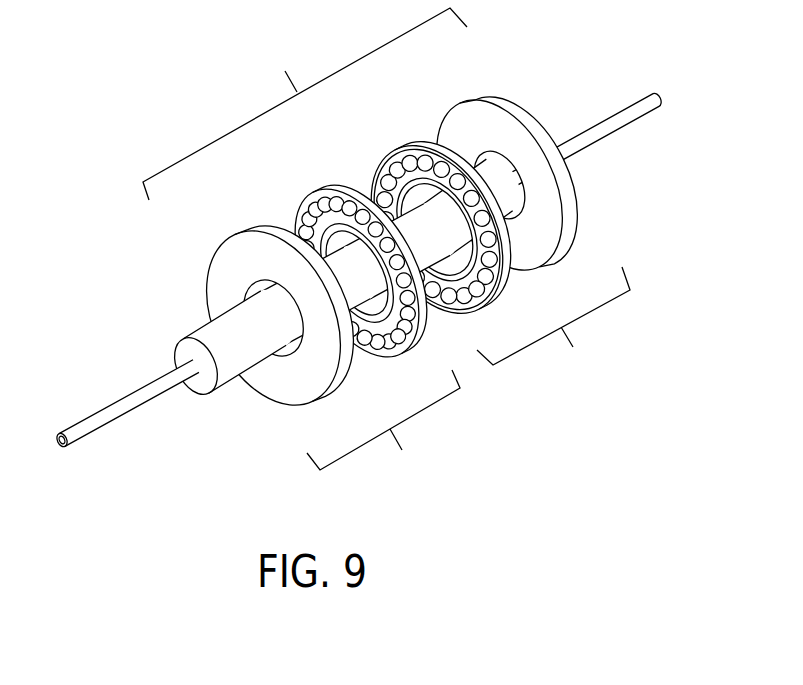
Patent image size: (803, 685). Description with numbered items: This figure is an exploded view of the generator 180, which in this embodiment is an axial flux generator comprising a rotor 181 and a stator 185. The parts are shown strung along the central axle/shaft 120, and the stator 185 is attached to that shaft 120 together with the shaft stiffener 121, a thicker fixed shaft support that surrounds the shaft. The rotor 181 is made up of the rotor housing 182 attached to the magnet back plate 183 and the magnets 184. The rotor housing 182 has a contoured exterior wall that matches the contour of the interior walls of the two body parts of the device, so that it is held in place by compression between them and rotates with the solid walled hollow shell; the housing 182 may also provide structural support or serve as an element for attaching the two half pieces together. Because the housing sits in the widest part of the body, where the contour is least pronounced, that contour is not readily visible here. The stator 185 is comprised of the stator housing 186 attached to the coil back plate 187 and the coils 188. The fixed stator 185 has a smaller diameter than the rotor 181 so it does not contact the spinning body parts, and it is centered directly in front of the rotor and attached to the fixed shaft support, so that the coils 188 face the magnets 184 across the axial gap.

The central axle/shaft 120 is at (128, 386).
The shaft stiffener 121 is at (227, 374).
The generator 180 is at (305, 104).
The rotor 181 is at (383, 435).
The rotor housing 182 is at (258, 241).
The magnet back plate 183 is at (324, 190).
The magnets 184 is at (377, 341).
The stator 185 is at (553, 330).
The stator housing 186 is at (498, 102).
The coil back plate 187 is at (411, 145).
The coils 188 is at (488, 272).